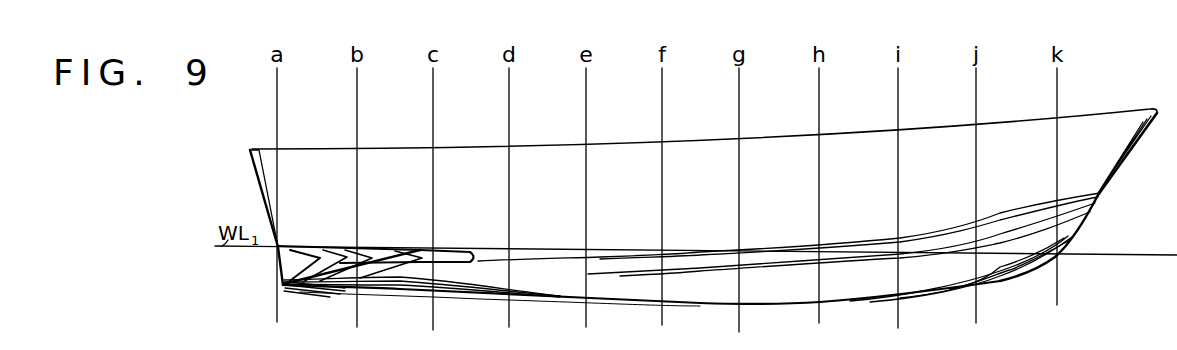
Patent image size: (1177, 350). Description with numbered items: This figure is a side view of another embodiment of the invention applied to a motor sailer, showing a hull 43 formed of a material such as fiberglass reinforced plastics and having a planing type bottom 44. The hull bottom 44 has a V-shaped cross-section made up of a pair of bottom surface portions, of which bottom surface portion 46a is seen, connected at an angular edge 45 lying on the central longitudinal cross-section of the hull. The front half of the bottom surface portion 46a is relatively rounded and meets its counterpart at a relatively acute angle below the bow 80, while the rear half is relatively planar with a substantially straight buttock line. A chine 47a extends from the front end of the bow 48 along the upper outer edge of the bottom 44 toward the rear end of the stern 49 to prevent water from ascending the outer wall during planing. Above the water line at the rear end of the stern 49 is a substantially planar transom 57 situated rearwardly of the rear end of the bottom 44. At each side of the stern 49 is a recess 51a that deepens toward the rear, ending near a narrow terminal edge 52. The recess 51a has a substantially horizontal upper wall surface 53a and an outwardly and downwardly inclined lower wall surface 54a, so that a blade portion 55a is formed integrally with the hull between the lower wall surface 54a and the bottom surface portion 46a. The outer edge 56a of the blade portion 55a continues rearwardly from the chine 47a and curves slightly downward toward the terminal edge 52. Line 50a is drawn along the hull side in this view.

The hull 43 is at (843, 131).
The hull bottom 44 is at (470, 273).
The angular edge 45 is at (938, 293).
The bottom surface portion 46a is at (850, 293).
The chine 47a is at (687, 258).
The bow 48 is at (1112, 130).
The stern 49 is at (320, 172).
The upper chine line 50a is at (857, 258).
The recess 51a is at (420, 253).
The narrow terminal edge 52 is at (283, 279).
The upper wall surface 53a is at (382, 248).
The lower wall surface 54a is at (348, 270).
The blade portion 55a is at (326, 262).
The outer edge 56a is at (312, 277).
The transom 57 is at (258, 183).
The bow 80 is at (1090, 214).